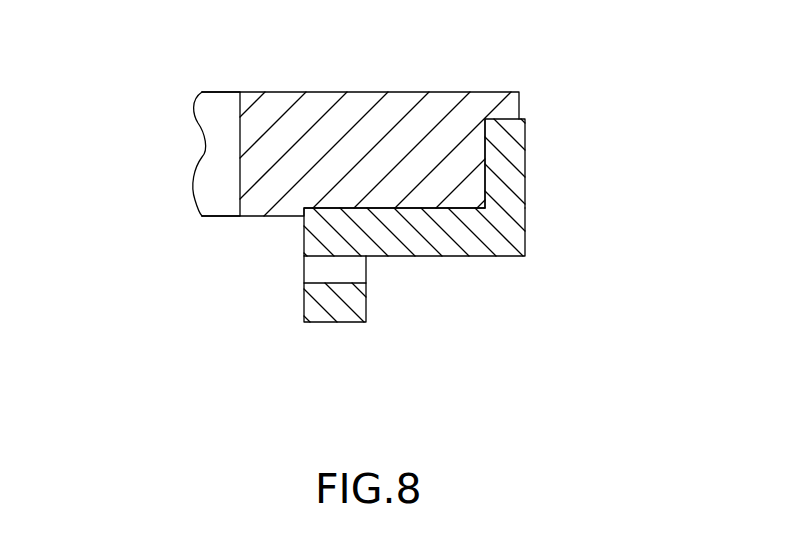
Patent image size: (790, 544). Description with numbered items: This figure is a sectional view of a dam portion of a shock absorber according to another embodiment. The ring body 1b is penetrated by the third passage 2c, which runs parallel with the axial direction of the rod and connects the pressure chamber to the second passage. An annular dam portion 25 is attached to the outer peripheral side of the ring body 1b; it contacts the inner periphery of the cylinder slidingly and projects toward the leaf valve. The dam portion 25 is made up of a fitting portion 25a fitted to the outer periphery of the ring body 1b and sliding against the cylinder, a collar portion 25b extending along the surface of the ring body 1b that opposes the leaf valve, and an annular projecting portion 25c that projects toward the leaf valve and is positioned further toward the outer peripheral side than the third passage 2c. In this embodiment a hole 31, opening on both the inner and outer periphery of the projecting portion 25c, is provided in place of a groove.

The ring body 1b is at (353, 108).
The third passage 2c is at (218, 151).
The dam portion 25 is at (532, 229).
The fitting portion 25a is at (510, 180).
The collar portion 25b is at (408, 243).
The projecting portion 25c is at (337, 323).
The hole 31 is at (313, 265).